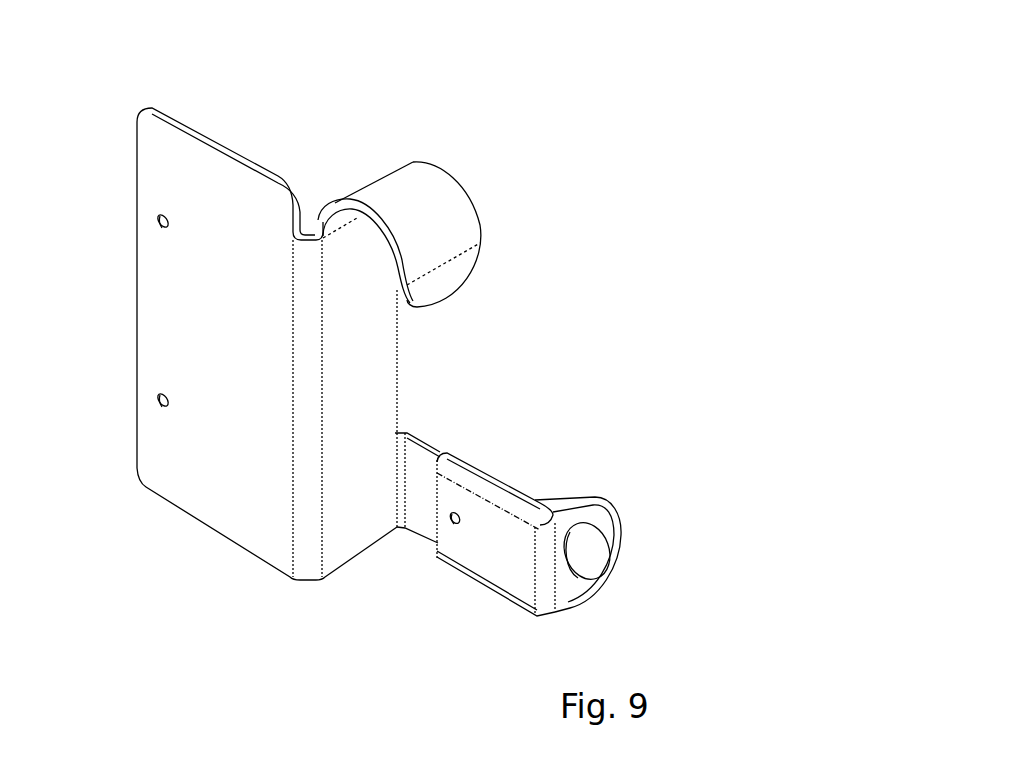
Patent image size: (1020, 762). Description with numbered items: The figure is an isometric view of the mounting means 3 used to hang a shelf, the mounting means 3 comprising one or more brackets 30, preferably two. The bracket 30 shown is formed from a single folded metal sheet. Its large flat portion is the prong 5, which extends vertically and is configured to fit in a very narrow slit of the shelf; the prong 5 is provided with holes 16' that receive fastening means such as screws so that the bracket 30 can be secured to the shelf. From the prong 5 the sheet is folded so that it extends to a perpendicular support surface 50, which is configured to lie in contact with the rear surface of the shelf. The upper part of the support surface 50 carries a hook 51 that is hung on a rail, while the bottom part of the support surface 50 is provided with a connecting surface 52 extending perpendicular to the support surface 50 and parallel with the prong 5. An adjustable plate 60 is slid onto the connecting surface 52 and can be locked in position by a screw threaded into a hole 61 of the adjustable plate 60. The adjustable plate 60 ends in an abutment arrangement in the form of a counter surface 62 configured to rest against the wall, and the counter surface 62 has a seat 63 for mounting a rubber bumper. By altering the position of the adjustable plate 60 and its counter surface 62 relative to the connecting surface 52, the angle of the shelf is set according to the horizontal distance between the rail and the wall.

The mounting means 3 is at (373, 381).
The bracket 30 is at (512, 204).
The prong 5 is at (222, 522).
The holes 16' is at (96, 278).
The support surface 50 is at (378, 377).
The hook 51 is at (413, 176).
The connecting surface 52 is at (413, 513).
The adjustable plate 60 is at (533, 497).
The hole 61 is at (452, 530).
The counter surface 62 is at (608, 513).
The seat 63 is at (593, 567).